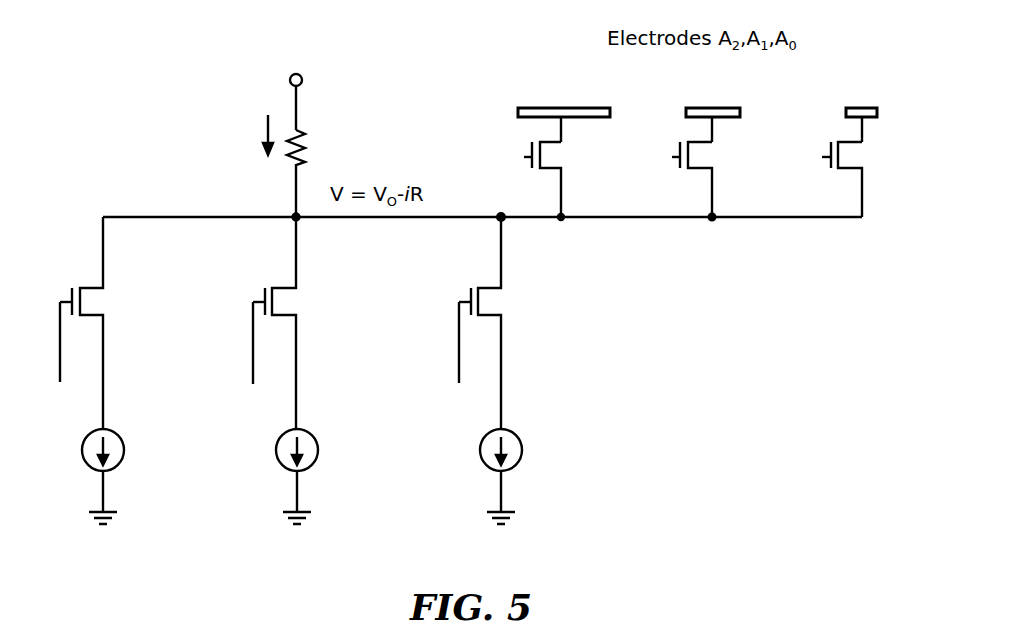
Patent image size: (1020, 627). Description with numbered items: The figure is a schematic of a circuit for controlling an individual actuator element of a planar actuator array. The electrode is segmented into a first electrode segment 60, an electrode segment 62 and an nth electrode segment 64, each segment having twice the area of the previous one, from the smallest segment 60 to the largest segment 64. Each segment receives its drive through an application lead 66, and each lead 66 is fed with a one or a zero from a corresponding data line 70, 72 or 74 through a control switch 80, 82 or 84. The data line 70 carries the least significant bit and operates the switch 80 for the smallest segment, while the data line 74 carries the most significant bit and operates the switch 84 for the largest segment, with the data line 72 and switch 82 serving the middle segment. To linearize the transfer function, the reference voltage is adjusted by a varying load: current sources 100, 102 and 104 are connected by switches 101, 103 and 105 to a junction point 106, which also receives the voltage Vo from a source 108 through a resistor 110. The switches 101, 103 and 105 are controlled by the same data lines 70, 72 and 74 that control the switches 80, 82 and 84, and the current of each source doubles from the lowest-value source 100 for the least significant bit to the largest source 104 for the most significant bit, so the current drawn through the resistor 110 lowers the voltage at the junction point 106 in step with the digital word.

The first electrode segment 60 is at (855, 108).
The electrode segment 62 is at (703, 108).
The nth electrode segment 64 is at (540, 108).
The application lead 66 is at (562, 130).
The data line 70 is at (459, 360).
The data line 72 is at (253, 360).
The data line 74 is at (60, 367).
The control switch 80 is at (848, 160).
The control switch 82 is at (698, 160).
The control switch 84 is at (532, 148).
The current source 100 is at (488, 469).
The switch 101 is at (493, 297).
The current source 102 is at (284, 469).
The switch 103 is at (290, 297).
The current source 104 is at (89, 469).
The switch 105 is at (97, 297).
The junction point 106 is at (296, 215).
The source 108 is at (302, 82).
The resistor 110 is at (305, 143).